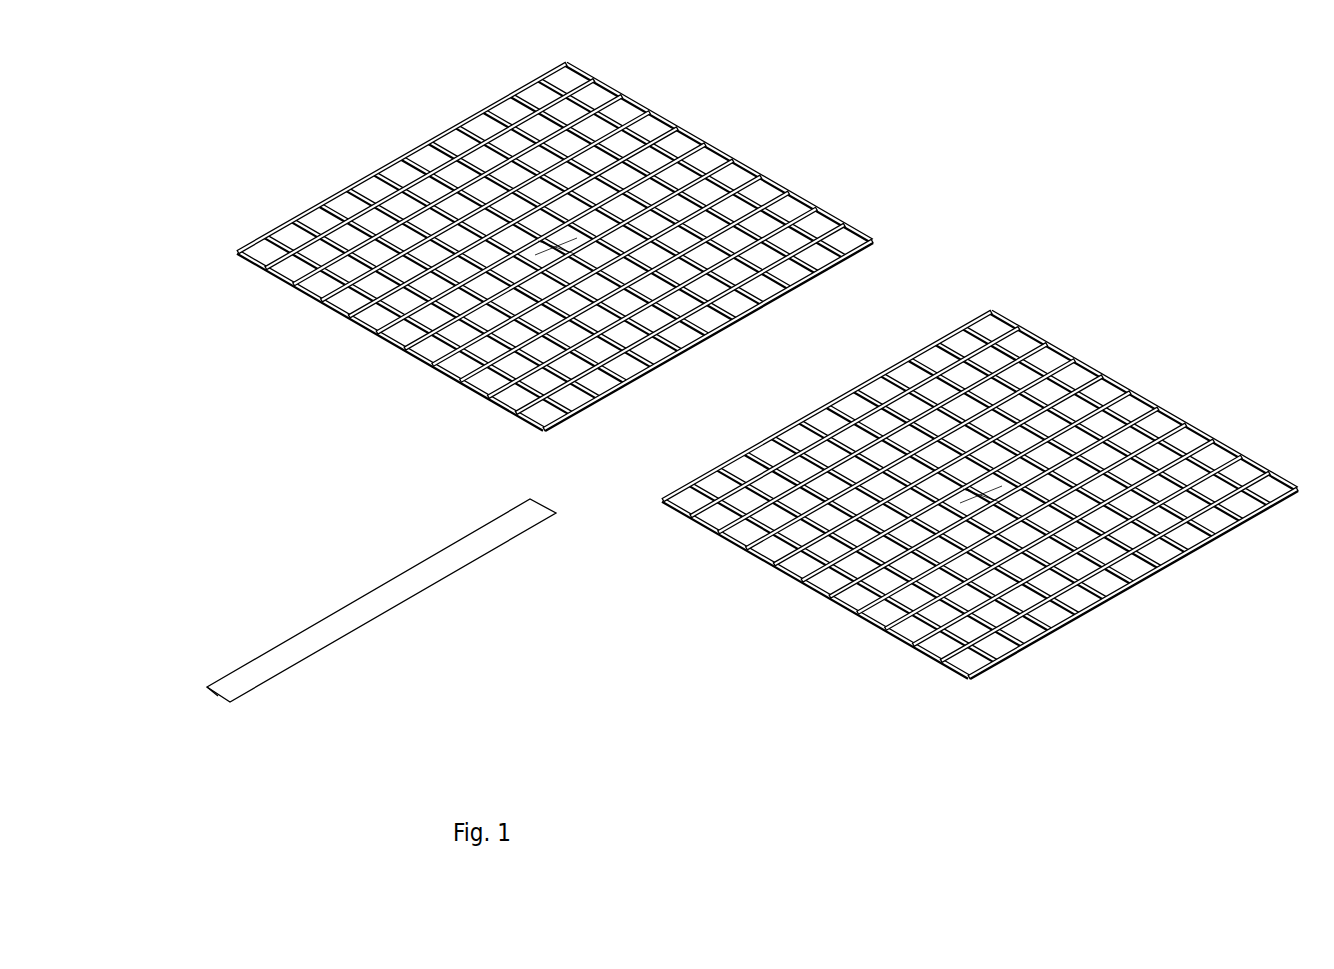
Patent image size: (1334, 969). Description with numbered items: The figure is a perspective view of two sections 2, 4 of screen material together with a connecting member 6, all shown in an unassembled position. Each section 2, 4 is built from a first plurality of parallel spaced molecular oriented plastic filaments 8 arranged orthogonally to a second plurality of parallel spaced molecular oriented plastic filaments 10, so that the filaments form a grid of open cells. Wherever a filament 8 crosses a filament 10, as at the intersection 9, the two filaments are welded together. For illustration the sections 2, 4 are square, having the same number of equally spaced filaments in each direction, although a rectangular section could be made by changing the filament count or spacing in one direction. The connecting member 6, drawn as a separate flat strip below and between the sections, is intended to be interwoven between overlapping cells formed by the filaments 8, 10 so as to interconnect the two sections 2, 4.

The section of screen material 2 is at (683, 133).
The section of screen material 4 is at (1090, 370).
The connecting member 6 is at (218, 697).
The first plurality of parallel spaced molecular oriented plastic filaments 8 is at (740, 218).
The intersection 9 is at (730, 188).
The second plurality of parallel spaced molecular oriented plastic filaments 10 is at (823, 240).